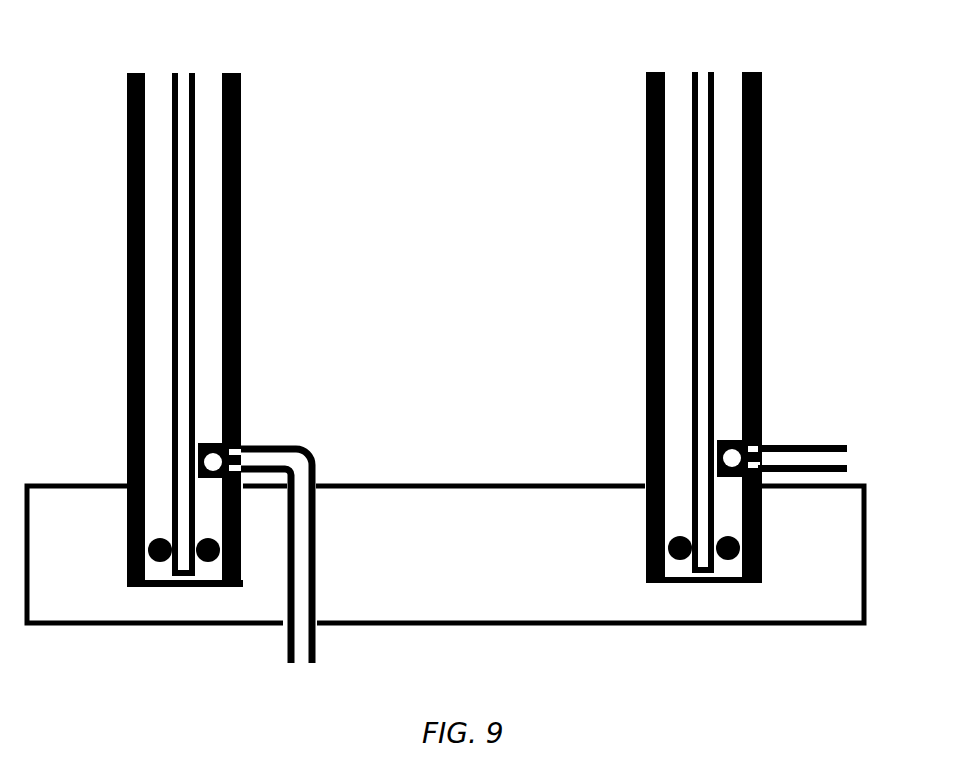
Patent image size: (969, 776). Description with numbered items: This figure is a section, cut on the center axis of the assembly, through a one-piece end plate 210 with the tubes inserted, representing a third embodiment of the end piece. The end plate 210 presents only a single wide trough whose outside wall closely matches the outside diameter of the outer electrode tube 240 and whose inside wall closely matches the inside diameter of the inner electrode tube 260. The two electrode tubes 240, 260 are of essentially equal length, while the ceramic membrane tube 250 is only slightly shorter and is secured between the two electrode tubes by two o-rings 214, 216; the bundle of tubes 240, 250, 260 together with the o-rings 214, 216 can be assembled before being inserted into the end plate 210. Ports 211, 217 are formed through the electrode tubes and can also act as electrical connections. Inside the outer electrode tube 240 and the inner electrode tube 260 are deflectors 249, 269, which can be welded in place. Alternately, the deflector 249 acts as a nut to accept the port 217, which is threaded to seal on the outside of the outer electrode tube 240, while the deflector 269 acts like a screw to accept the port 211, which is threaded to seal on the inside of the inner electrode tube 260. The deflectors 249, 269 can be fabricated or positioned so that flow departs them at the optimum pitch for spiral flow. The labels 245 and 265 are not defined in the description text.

The end plate 210 is at (579, 641).
The port 211 is at (302, 645).
The o-ring 214 is at (728, 560).
The o-ring 216 is at (158, 562).
The port 217 is at (830, 458).
The outer electrode tube 240 is at (137, 73).
The outer tube wall 245 is at (727, 82).
The deflector 249 is at (732, 440).
The ceramic membrane tube 250 is at (184, 85).
The inner electrode tube 260 is at (232, 73).
The inner tube 265 is at (678, 82).
The deflector 269 is at (213, 442).